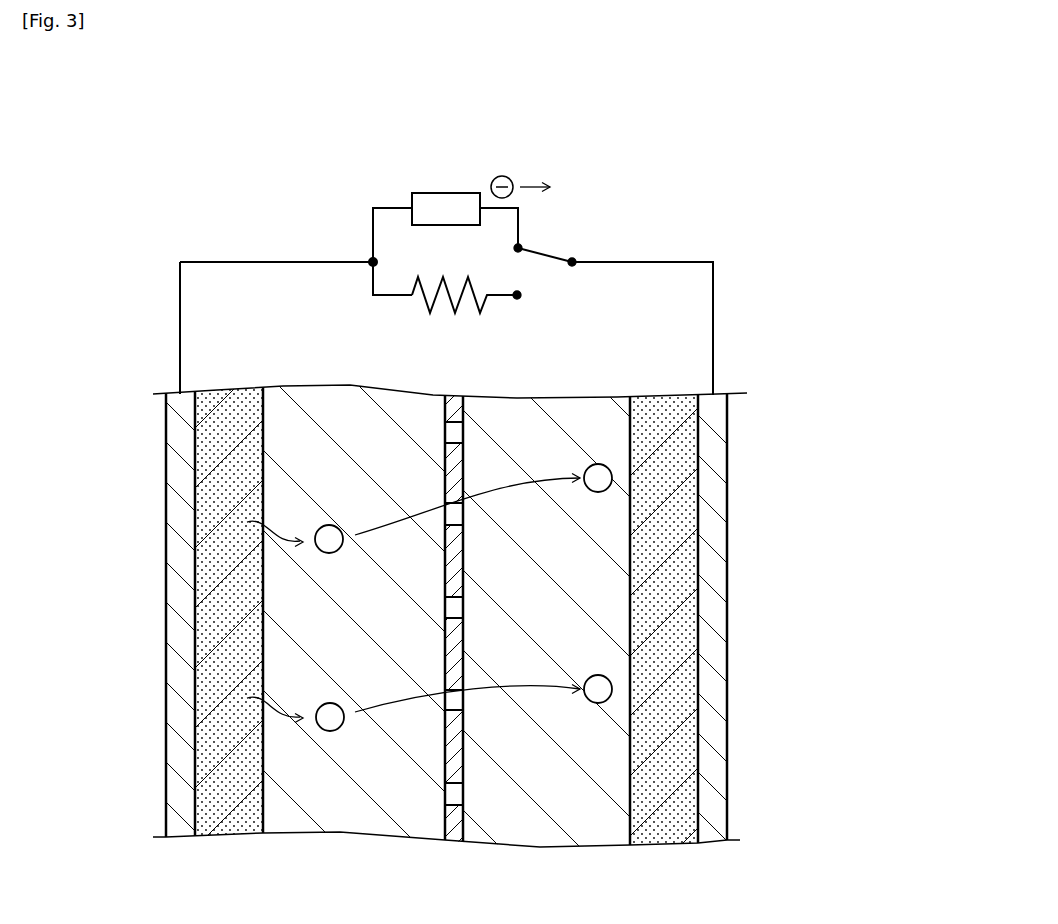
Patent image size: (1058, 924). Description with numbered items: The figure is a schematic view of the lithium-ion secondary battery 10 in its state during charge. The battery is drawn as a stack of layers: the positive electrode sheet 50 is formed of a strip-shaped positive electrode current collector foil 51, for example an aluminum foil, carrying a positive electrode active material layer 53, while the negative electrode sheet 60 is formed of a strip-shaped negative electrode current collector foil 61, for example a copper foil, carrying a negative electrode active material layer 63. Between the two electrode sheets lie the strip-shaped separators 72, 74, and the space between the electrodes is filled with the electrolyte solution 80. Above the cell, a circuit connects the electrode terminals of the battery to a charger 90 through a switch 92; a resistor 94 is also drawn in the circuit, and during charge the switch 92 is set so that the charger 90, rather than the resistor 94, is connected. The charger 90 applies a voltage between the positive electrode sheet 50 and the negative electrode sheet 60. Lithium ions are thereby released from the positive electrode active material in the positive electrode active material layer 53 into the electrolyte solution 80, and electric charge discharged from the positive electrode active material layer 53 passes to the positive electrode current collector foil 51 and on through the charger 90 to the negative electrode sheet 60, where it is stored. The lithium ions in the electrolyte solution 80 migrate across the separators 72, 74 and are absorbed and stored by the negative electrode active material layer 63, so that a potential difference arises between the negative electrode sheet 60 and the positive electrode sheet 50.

The lithium-ion secondary battery 10 is at (684, 178).
The positive electrode sheet 50 is at (331, 577).
The positive electrode current collector foil 51 is at (166, 514).
The positive electrode active material layer 53 is at (225, 390).
The negative electrode sheet 60 is at (657, 581).
The negative electrode current collector foil 61 is at (727, 528).
The negative electrode active material layer 63 is at (660, 392).
The separator 72 is at (460, 639).
The separator 74 is at (463, 821).
The electrolyte solution 80 is at (529, 639).
The charger 90 is at (468, 193).
The switch 92 is at (557, 240).
The resistor 94 is at (446, 312).